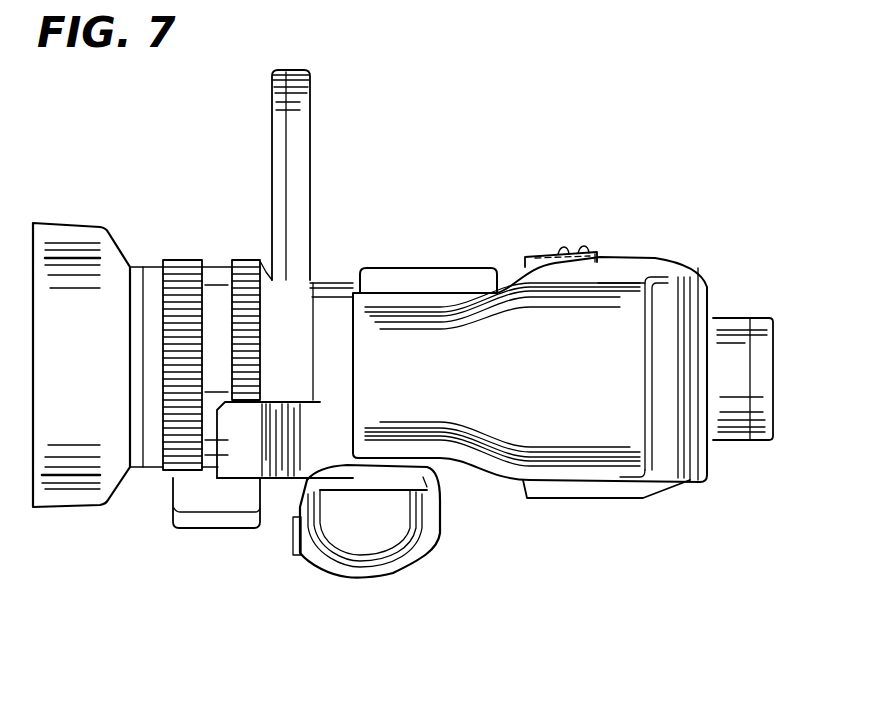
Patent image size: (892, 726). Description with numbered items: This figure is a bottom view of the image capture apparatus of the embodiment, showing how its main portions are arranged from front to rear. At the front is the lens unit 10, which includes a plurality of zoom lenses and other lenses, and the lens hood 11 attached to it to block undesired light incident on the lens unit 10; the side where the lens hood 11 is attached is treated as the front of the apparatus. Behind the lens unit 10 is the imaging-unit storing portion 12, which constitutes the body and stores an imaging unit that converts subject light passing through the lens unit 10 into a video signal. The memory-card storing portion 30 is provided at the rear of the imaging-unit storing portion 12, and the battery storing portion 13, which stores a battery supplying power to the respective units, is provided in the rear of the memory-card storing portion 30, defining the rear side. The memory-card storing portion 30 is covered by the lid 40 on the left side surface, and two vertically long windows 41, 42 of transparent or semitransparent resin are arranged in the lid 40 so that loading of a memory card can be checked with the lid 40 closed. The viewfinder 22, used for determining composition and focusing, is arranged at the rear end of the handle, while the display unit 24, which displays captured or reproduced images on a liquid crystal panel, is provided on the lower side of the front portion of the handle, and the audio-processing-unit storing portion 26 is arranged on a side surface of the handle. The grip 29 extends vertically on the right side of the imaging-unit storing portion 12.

The lens unit 10 is at (215, 265).
The lens hood 11 is at (67, 495).
The imaging-unit storing portion 12 is at (427, 275).
The battery storing portion 13 is at (710, 458).
The viewfinder 22 is at (732, 322).
The display unit 24 is at (296, 142).
The audio-processing-unit storing portion 26 is at (213, 498).
The grip 29 is at (360, 537).
The memory-card storing portion 30 is at (653, 258).
The lid 40 is at (543, 252).
The window 41 is at (563, 248).
The window 42 is at (583, 248).